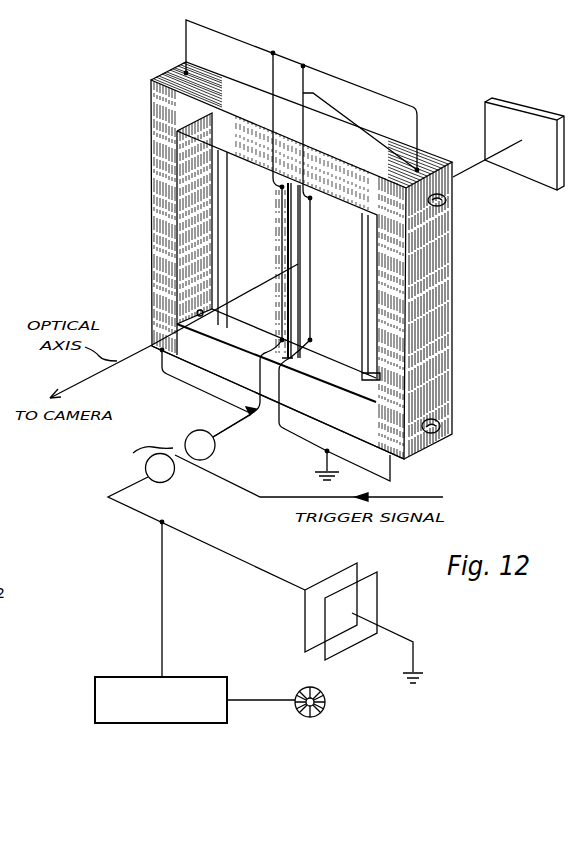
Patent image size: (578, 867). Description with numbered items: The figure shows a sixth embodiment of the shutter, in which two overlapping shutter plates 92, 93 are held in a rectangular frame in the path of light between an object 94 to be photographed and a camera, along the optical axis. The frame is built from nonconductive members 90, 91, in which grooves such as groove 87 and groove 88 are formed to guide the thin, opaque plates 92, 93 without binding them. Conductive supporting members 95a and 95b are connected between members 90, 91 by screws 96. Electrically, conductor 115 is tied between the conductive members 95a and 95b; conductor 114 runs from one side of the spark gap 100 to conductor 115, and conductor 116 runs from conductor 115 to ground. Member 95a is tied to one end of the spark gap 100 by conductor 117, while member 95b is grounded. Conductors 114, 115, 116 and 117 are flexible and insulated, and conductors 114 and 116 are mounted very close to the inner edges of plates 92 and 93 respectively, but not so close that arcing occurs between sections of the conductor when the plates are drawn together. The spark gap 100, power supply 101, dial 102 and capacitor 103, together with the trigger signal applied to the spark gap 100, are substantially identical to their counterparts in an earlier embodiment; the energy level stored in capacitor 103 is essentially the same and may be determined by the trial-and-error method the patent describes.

The groove 87 is at (197, 313).
The groove 88 is at (385, 376).
The member 90 is at (226, 384).
The member 91 is at (240, 78).
The shutter plate 92 is at (243, 241).
The shutter plate 93 is at (352, 278).
The object 94 is at (541, 184).
The supporting member 95a is at (159, 173).
The supporting member 95b is at (452, 345).
The screw 96 is at (446, 203).
The spark gap 100 is at (200, 491).
The power supply 101 is at (160, 723).
The dial 102 is at (322, 710).
The capacitor 103 is at (390, 657).
The conductor 114 is at (255, 415).
The conductor 115 is at (332, 68).
The conductor 116 is at (312, 94).
The conductor 117 is at (206, 401).